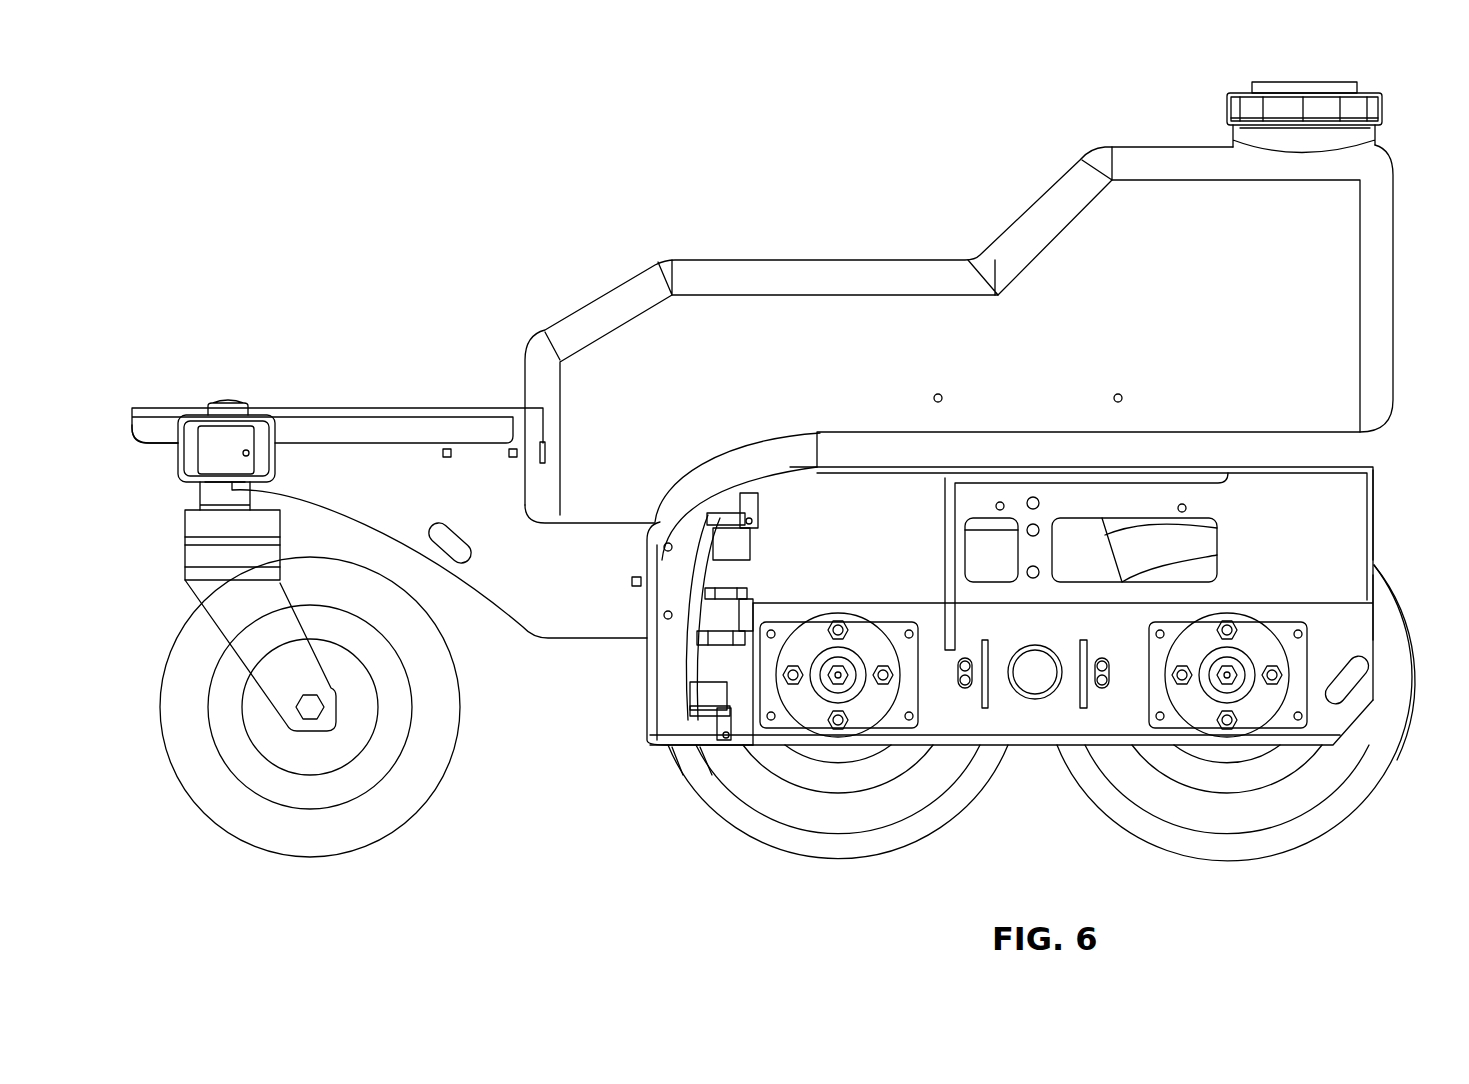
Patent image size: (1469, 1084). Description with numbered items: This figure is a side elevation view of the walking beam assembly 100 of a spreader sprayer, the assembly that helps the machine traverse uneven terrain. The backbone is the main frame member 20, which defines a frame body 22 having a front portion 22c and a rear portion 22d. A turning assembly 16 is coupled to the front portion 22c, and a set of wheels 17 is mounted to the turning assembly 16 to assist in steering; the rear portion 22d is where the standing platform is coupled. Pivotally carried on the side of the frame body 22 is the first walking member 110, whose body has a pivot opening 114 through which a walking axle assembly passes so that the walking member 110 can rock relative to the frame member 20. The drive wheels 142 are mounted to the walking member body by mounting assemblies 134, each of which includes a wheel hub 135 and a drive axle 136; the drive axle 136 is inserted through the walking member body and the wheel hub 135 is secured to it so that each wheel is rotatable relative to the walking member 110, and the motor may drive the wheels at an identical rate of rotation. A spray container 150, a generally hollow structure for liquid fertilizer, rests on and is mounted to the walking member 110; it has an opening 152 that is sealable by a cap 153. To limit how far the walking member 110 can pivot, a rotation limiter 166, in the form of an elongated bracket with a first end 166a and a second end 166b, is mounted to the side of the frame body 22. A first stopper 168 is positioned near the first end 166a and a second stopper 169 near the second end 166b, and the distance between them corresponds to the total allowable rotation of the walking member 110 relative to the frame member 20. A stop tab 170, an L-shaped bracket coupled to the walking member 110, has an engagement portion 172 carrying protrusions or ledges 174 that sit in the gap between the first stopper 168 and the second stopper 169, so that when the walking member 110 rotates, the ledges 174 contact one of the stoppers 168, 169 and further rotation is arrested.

The walking beam assembly 100 is at (208, 140).
The turning assembly 16 is at (188, 600).
The wheels 17 is at (328, 848).
The main frame member 20 is at (392, 458).
The frame body 22 is at (547, 628).
The front portion 22c is at (127, 447).
The rear portion 22d is at (1387, 561).
The first walking member 110 is at (1352, 550).
The pivot opening 114 is at (1035, 708).
The mounting assembly 134 is at (786, 737).
The wheel hub 135 is at (865, 712).
The drive axle 136 is at (1232, 666).
The drive wheels 142 is at (735, 818).
The spray container 150 is at (838, 268).
The opening 152 is at (1388, 128).
The cap 153 is at (1288, 84).
The rotation limiter 166 is at (657, 703).
The first end 166a is at (684, 762).
The second end 166b is at (712, 477).
The first stopper 168 is at (700, 706).
The second stopper 169 is at (742, 545).
The stop tab 170 is at (705, 622).
The engagement portion 172 is at (746, 604).
The protrusions or ledges 174 is at (705, 590).